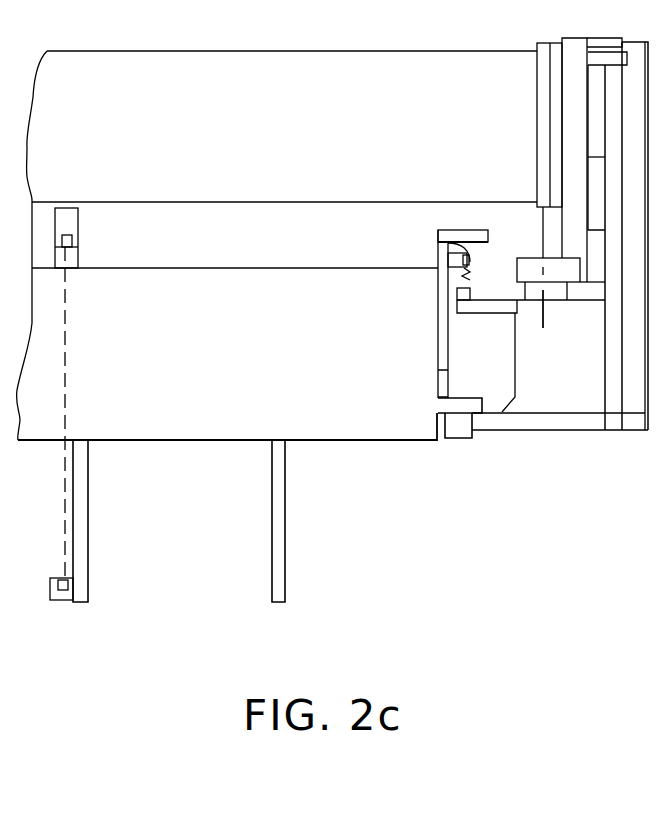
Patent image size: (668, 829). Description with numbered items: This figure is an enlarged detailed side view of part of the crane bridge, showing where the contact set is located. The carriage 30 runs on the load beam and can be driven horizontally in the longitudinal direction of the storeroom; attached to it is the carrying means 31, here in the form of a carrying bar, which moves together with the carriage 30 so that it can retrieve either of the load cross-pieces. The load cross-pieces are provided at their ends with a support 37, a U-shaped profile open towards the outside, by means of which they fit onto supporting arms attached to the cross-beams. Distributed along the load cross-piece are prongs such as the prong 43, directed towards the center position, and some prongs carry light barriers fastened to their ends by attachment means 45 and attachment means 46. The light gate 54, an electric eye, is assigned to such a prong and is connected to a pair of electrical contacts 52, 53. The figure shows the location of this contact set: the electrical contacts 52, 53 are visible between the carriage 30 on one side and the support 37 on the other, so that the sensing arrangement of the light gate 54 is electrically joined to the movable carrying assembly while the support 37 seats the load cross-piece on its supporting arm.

The carriage 30 is at (610, 420).
The carrying means 31 is at (457, 432).
The support 37 is at (472, 230).
The prong 43 is at (277, 585).
The attachment means 45 is at (63, 602).
The attachment means 46 is at (65, 235).
The electrical contact 52 is at (448, 245).
The electrical contact 53 is at (462, 313).
The light gate 54 is at (67, 325).